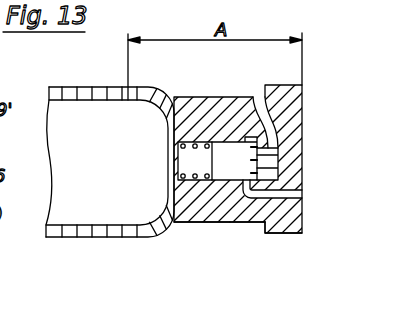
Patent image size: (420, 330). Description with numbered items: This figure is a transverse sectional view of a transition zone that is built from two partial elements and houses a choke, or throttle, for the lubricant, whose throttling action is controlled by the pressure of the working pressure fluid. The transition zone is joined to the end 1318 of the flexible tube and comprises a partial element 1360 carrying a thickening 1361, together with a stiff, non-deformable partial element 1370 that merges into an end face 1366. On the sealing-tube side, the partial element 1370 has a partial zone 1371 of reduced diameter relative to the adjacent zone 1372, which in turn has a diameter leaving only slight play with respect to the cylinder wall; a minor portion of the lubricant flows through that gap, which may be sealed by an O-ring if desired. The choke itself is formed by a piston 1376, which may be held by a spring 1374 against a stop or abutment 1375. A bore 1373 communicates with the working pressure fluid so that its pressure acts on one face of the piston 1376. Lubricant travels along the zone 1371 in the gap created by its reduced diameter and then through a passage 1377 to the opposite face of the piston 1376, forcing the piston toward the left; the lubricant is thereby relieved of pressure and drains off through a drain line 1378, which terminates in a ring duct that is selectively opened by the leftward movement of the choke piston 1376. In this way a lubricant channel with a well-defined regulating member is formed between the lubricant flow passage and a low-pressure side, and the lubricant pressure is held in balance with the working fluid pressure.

The end of the flexible tube 1318 is at (79, 93).
The partial element 1360 is at (157, 101).
The thickening 1361 is at (163, 220).
The stiff, non-deformable partial element 1370 is at (222, 97).
The bore 1373 is at (177, 160).
The spring 1374 is at (189, 227).
The piston 1376 is at (223, 180).
The partial zone 1371 is at (240, 215).
The zone 1372 is at (285, 227).
The passage 1377 is at (263, 117).
The stop or abutment 1375 is at (277, 150).
The end face 1366 is at (278, 168).
The drain line 1378 is at (302, 196).